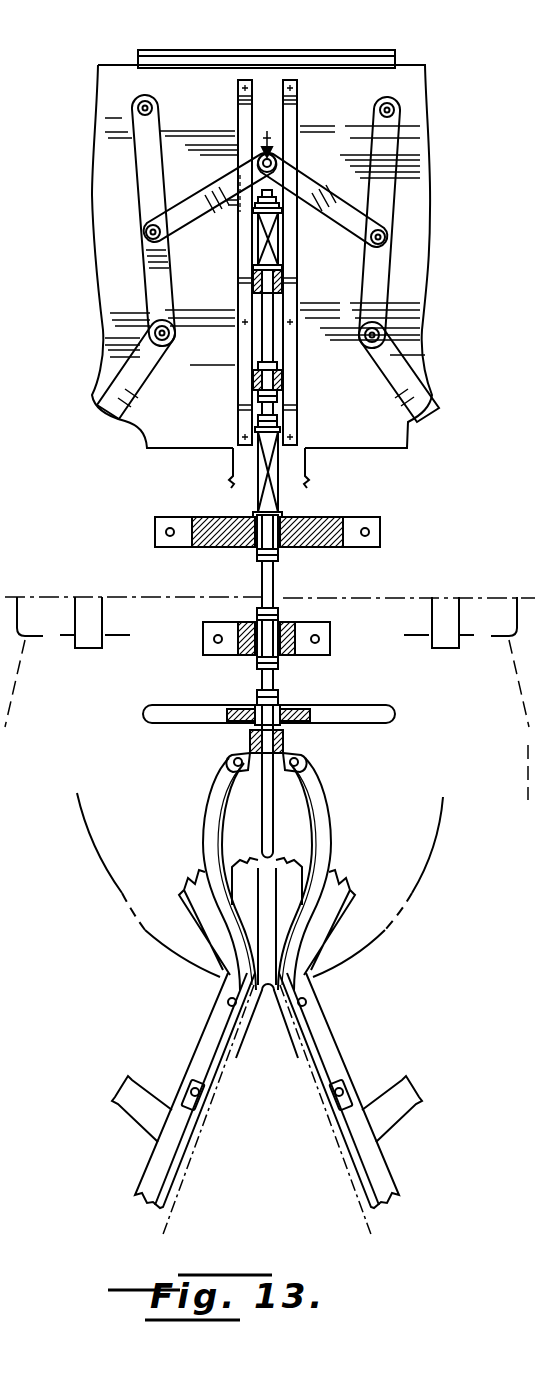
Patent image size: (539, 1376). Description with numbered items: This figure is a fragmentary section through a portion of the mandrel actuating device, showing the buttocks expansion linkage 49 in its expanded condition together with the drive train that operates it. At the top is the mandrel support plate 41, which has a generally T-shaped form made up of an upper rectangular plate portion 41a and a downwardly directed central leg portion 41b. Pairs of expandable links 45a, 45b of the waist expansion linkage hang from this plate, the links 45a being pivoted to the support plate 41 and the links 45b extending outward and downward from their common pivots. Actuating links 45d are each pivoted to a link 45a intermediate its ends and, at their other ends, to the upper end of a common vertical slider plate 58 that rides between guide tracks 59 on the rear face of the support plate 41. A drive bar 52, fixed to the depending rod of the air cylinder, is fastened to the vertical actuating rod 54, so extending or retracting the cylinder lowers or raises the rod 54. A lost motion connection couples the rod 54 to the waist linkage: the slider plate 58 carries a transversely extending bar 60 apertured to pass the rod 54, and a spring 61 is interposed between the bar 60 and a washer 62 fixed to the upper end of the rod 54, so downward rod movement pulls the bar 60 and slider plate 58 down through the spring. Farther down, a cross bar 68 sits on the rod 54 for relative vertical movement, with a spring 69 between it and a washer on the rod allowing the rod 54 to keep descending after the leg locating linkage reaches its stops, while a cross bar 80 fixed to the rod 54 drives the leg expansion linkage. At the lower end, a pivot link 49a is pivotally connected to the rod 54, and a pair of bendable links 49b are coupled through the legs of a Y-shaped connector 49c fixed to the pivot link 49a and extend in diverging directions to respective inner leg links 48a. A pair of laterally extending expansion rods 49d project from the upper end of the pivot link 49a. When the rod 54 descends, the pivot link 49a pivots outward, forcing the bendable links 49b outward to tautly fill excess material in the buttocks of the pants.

The mandrel support plate 41 is at (114, 78).
The upper rectangular plate portion 41a is at (182, 442).
The downwardly directed central leg portion 41b is at (308, 468).
The expandable link 45a is at (134, 165).
The expandable link 45b is at (108, 398).
The actuating link 45d is at (186, 200).
The inner leg link 48a is at (150, 1165).
The buttocks expansion linkage 49 is at (178, 798).
The pivot link 49a is at (245, 738).
The bendable link 49b is at (205, 833).
The Y-shaped connector 49c is at (302, 770).
The expansion rod 49d is at (143, 714).
The drive bar 52 is at (257, 383).
The actuating rod 54 is at (273, 325).
The vertical slider plate 58 is at (276, 156).
The guide track 59 is at (277, 90).
The transversely extending bar 60 is at (257, 283).
The spring 61 is at (250, 248).
The washer 62 is at (284, 239).
The cross bar 68 is at (220, 547).
The spring 69 is at (258, 468).
The cross bar 80 is at (252, 658).